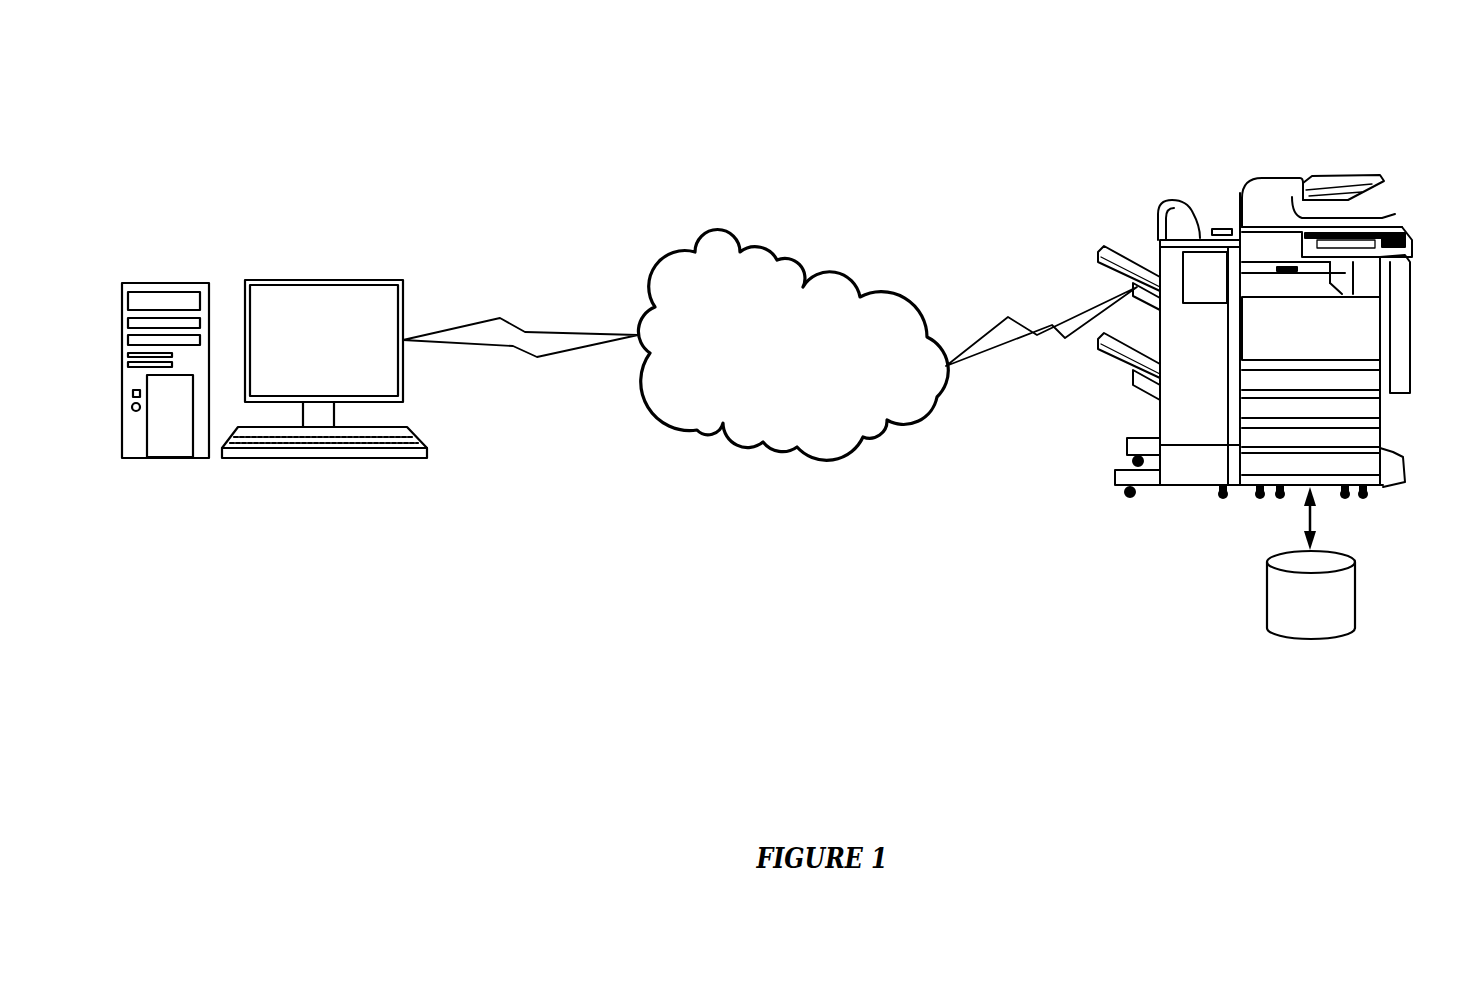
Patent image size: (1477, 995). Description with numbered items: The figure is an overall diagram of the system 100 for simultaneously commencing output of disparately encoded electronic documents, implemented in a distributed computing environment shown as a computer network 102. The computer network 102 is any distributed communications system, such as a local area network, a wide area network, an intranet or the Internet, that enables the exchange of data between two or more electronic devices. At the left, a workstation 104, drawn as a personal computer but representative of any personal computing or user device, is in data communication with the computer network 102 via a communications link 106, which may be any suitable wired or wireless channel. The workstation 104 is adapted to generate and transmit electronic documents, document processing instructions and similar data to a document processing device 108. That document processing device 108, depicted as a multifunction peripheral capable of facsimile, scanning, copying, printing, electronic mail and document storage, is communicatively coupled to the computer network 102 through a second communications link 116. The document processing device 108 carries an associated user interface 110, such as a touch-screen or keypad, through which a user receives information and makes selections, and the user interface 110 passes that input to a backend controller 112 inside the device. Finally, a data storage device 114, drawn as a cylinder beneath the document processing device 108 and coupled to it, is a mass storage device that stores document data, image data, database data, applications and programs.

The system 100 is at (488, 68).
The computer network 102 is at (712, 230).
The workstation 104 is at (330, 283).
The communications link 106 is at (542, 322).
The document processing device 108 is at (1262, 185).
The user interface 110 is at (1410, 240).
The controller 112 is at (1372, 338).
The data storage device 114 is at (1347, 633).
The communications link 116 is at (1057, 300).